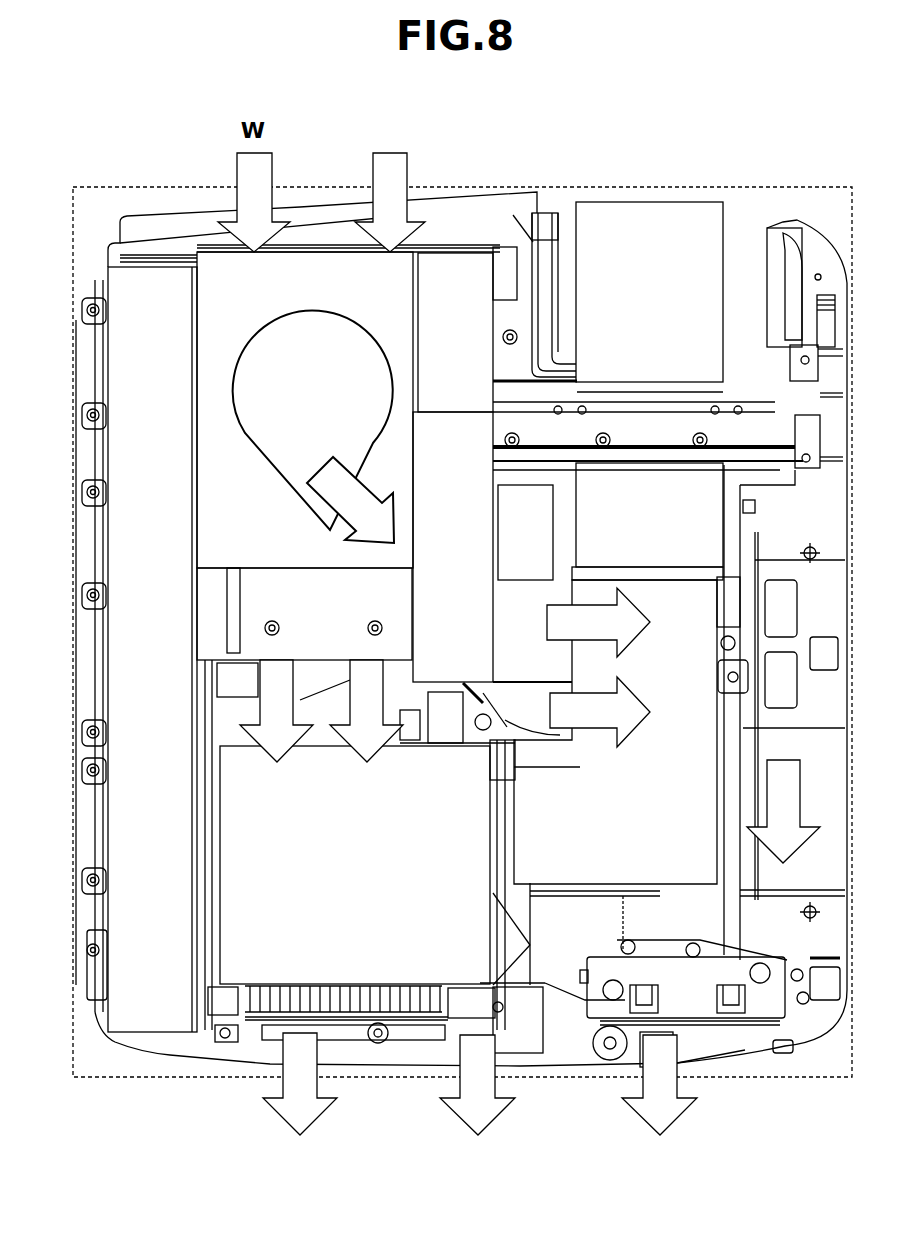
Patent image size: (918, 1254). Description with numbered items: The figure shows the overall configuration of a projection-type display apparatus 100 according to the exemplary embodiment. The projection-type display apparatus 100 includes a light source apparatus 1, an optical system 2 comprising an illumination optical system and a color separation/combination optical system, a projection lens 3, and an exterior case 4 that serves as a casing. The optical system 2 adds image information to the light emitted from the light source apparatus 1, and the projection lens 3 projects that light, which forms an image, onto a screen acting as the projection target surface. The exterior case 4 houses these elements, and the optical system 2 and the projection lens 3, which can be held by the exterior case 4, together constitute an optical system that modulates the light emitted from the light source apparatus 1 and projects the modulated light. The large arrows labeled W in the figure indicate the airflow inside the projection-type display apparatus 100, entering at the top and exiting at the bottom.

The projection-type display apparatus 100 is at (845, 108).
The light source apparatus 1 is at (262, 947).
The optical system 2 is at (670, 853).
The projection lens 3 is at (683, 255).
The exterior case 4 is at (110, 1078).